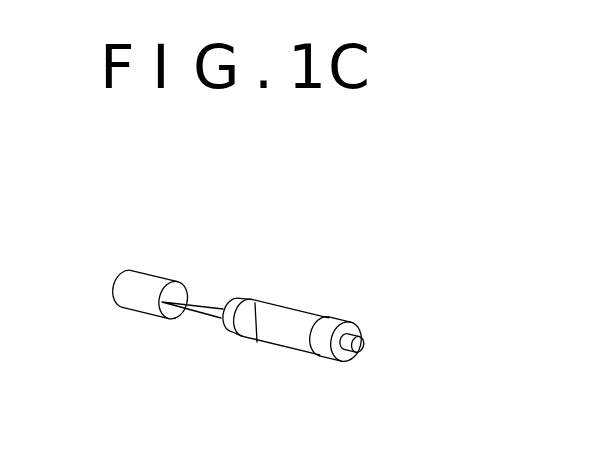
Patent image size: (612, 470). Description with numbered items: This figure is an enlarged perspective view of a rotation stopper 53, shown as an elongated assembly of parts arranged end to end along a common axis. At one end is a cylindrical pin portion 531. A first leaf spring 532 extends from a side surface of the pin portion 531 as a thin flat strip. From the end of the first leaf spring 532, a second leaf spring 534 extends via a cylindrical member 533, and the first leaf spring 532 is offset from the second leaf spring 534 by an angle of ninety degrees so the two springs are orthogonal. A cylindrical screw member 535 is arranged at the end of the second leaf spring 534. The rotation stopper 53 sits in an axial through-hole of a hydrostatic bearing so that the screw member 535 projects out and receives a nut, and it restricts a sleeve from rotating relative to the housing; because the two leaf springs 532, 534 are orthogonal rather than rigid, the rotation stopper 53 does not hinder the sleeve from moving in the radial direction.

The rotation stopper 53 is at (195, 336).
The cylindrical pin portion 531 is at (133, 282).
The first leaf spring 532 is at (202, 304).
The cylindrical member 533 is at (250, 300).
The second leaf spring 534 is at (292, 318).
The cylindrical screw member 535 is at (358, 338).